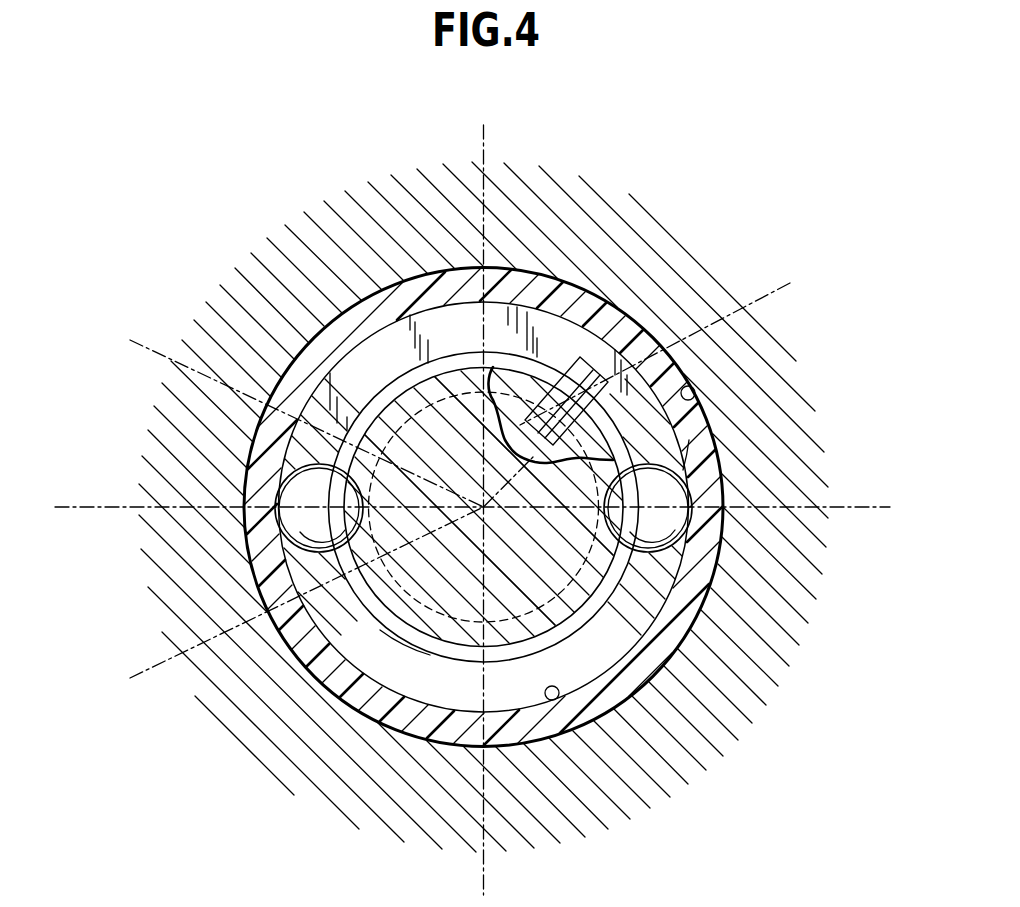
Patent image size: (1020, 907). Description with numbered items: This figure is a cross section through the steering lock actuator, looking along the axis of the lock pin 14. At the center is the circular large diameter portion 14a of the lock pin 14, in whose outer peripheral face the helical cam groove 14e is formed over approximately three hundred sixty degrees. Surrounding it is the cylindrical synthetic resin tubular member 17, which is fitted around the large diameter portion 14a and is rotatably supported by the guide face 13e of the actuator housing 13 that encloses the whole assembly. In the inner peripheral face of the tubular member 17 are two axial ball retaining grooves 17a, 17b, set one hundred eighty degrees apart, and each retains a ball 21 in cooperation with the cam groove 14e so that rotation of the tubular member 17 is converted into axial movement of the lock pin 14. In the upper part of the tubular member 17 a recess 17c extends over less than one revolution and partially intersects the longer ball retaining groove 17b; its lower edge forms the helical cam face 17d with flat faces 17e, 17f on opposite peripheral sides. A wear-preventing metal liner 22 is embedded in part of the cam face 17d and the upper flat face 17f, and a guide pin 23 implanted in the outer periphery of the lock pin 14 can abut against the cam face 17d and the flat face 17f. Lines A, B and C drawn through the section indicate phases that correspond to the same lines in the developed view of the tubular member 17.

The actuator housing 13 is at (660, 213).
The guide face 13e is at (690, 376).
The lock pin 14 is at (389, 398).
The large diameter portion 14a is at (412, 632).
The helical cam groove 14e is at (580, 622).
The tubular member 17 is at (425, 270).
The ball retaining groove 17a is at (383, 548).
The ball retaining groove 17b is at (623, 528).
The recess 17c is at (558, 700).
The helical cam face 17d is at (563, 350).
The flat face 17e is at (680, 447).
The flat face 17f is at (393, 337).
The ball 21 is at (278, 470).
The liner 22 is at (510, 325).
The guide pin 23 is at (582, 430).
The line A is at (296, 602).
The line B is at (296, 417).
The line C is at (648, 383).